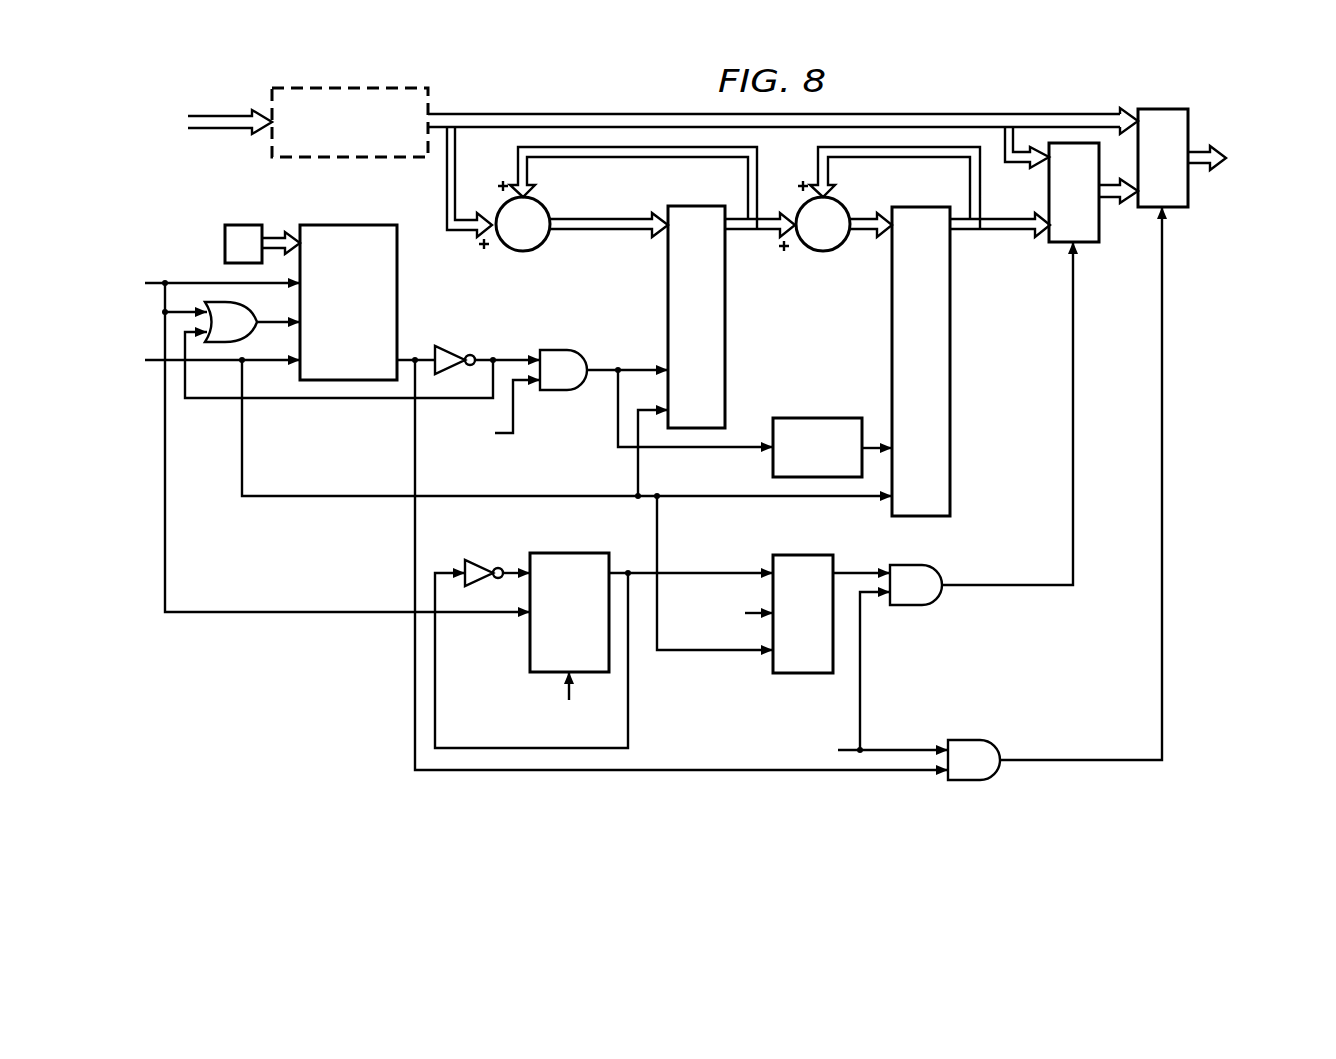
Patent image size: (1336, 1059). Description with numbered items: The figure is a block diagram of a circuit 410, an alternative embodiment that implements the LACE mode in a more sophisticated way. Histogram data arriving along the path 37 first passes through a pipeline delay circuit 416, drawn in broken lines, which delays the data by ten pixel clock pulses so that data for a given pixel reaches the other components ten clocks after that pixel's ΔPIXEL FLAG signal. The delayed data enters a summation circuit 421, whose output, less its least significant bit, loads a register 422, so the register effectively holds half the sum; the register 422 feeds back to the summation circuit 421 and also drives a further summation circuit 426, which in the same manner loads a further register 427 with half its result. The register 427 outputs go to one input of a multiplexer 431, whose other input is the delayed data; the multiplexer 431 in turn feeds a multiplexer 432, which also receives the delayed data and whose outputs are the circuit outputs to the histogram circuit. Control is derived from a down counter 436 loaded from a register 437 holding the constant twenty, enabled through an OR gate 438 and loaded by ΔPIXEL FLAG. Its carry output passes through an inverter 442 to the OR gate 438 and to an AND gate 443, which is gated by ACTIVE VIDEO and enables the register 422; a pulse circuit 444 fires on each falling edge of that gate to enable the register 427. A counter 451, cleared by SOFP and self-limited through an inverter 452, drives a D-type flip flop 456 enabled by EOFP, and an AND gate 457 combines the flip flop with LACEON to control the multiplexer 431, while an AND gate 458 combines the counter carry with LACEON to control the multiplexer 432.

The circuit 410 is at (1117, 72).
The path 37 is at (219, 115).
The pipeline delay circuit 416 is at (348, 88).
The register 437 is at (243, 225).
The down counter 436 is at (397, 283).
The OR gate 438 is at (213, 302).
The inverter 442 is at (454, 350).
The AND gate 443 is at (563, 350).
The summation circuit 421 is at (513, 250).
The register 422 is at (668, 318).
The summation circuit 426 is at (823, 251).
The register 427 is at (950, 362).
The pulse circuit 444 is at (818, 418).
The multiplexer 431 is at (1090, 242).
The multiplexer 432 is at (1176, 207).
The counter 451 is at (530, 640).
The inverter 452 is at (478, 562).
The D-type flip flop 456 is at (805, 673).
The AND gate 457 is at (912, 605).
The AND gate 458 is at (972, 780).